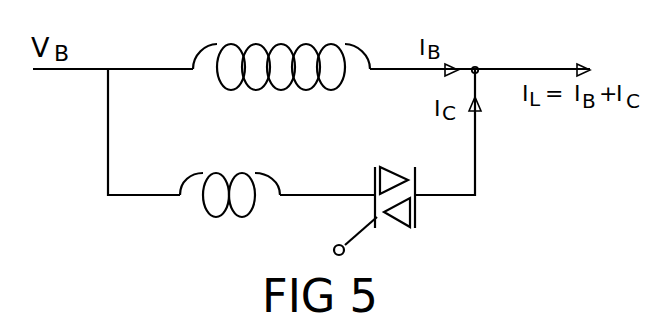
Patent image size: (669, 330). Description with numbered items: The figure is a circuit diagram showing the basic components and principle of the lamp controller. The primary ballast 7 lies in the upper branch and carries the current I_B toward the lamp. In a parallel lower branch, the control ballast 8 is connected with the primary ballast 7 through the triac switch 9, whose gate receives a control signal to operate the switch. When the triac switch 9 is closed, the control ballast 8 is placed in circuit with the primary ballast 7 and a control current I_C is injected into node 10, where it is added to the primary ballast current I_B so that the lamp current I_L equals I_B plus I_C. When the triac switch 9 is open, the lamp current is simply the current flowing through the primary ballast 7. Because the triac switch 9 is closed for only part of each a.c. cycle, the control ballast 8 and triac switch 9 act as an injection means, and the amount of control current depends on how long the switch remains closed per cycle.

The primary ballast 7 is at (213, 38).
The control ballast 8 is at (217, 162).
The triac switch 9 is at (411, 163).
The node 10 is at (468, 45).